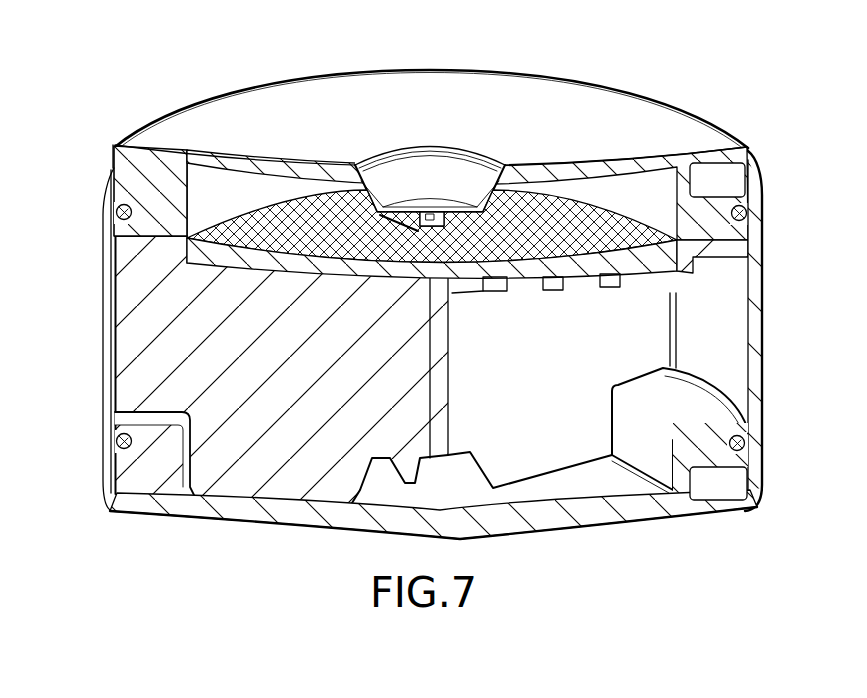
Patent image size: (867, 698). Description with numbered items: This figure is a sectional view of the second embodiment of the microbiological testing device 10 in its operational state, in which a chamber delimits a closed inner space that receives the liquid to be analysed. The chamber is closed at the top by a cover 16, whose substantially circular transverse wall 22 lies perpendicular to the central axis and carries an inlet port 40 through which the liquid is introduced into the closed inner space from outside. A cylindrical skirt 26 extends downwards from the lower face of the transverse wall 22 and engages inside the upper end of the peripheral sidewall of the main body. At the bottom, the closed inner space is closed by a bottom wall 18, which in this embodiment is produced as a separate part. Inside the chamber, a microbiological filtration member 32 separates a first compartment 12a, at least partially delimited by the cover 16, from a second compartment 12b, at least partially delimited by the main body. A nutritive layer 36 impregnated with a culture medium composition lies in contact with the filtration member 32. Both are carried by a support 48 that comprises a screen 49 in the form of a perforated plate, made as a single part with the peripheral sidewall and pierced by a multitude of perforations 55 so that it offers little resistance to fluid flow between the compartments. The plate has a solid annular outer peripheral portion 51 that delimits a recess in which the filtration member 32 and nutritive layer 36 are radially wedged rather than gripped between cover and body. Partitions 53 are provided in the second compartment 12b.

The microbiological testing device 10 is at (113, 83).
The cover 16 is at (625, 117).
The transverse wall 22 is at (310, 168).
The microbiological filtration member 32 is at (260, 197).
The inlet port 40 is at (437, 195).
The cylindrical skirt 26 is at (138, 190).
The nutritive layer 36 is at (200, 250).
The partitions 53 is at (167, 350).
The first compartment 12a is at (635, 193).
The second compartment 12b is at (693, 360).
The annular outer peripheral portion 51 is at (717, 250).
The support 48 is at (502, 316).
The screen 49 is at (527, 283).
The perforations 55 is at (550, 278).
The bottom wall 18 is at (602, 513).